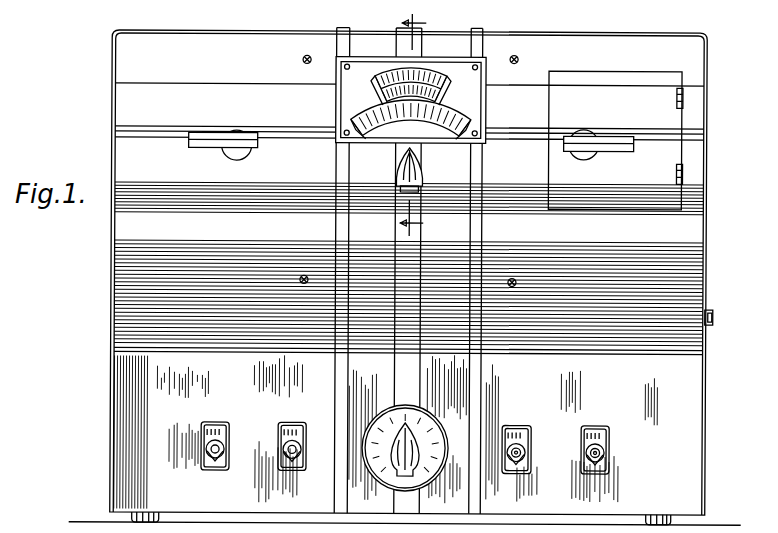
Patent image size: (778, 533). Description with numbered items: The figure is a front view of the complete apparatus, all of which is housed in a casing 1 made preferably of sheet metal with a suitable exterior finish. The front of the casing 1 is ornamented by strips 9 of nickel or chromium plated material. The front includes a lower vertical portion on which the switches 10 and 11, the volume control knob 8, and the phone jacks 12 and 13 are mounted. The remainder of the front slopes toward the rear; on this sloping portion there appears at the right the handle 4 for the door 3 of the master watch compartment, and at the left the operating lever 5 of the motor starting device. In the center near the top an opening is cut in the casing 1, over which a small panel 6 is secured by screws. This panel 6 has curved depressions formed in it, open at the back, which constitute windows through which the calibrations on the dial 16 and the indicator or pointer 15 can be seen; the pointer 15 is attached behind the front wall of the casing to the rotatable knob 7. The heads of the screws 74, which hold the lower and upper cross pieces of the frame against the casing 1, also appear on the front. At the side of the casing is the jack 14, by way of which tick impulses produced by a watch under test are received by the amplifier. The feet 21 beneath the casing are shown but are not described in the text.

The casing 1 is at (109, 279).
The door 3 is at (633, 200).
The handle 4 is at (608, 151).
The operating lever 5 is at (212, 149).
The panel 6 is at (341, 96).
The rotatable knob 7 is at (397, 172).
The volume control knob 8 is at (426, 436).
The strips 9 is at (395, 374).
The switch 10 is at (208, 441).
The switch 11 is at (290, 443).
The phone jack 12 is at (521, 447).
The phone jack 13 is at (600, 447).
The jack 14 is at (712, 324).
The indicator or pointer 15 is at (414, 80).
The dial 16 is at (442, 112).
The feet 21 is at (141, 513).
The screws 74 is at (303, 57).